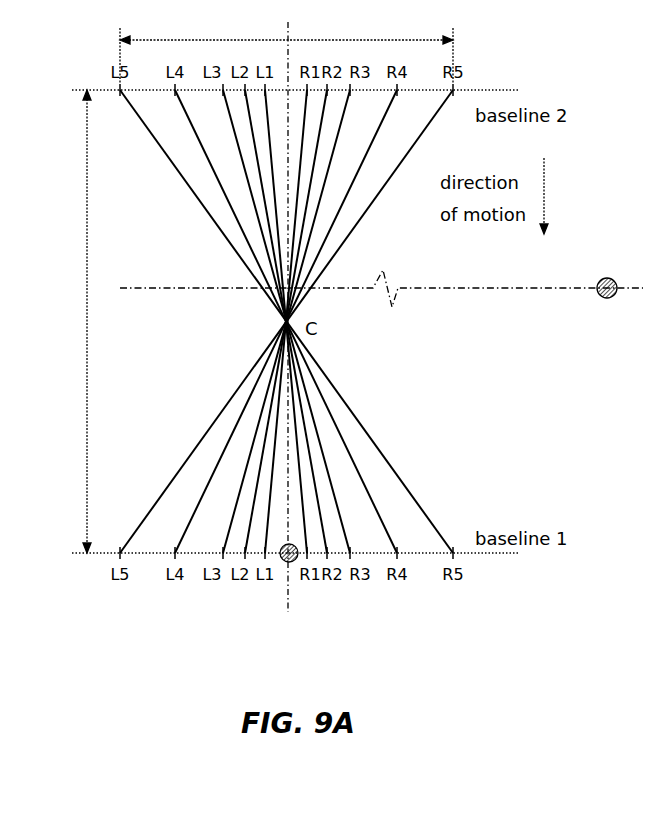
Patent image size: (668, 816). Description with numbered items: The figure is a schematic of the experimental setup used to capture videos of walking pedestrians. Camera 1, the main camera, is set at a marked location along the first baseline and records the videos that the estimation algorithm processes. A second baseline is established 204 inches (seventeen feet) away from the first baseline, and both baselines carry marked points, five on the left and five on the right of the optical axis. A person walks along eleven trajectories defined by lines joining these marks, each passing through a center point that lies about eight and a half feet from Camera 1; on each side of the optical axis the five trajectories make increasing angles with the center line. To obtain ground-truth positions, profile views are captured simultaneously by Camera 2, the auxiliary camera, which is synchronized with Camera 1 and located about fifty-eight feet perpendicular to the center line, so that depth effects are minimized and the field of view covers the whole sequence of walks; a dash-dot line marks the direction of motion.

The Camera 1 is at (286, 609).
The Camera 2 is at (551, 325).
The 204 inches 204 is at (257, 280).